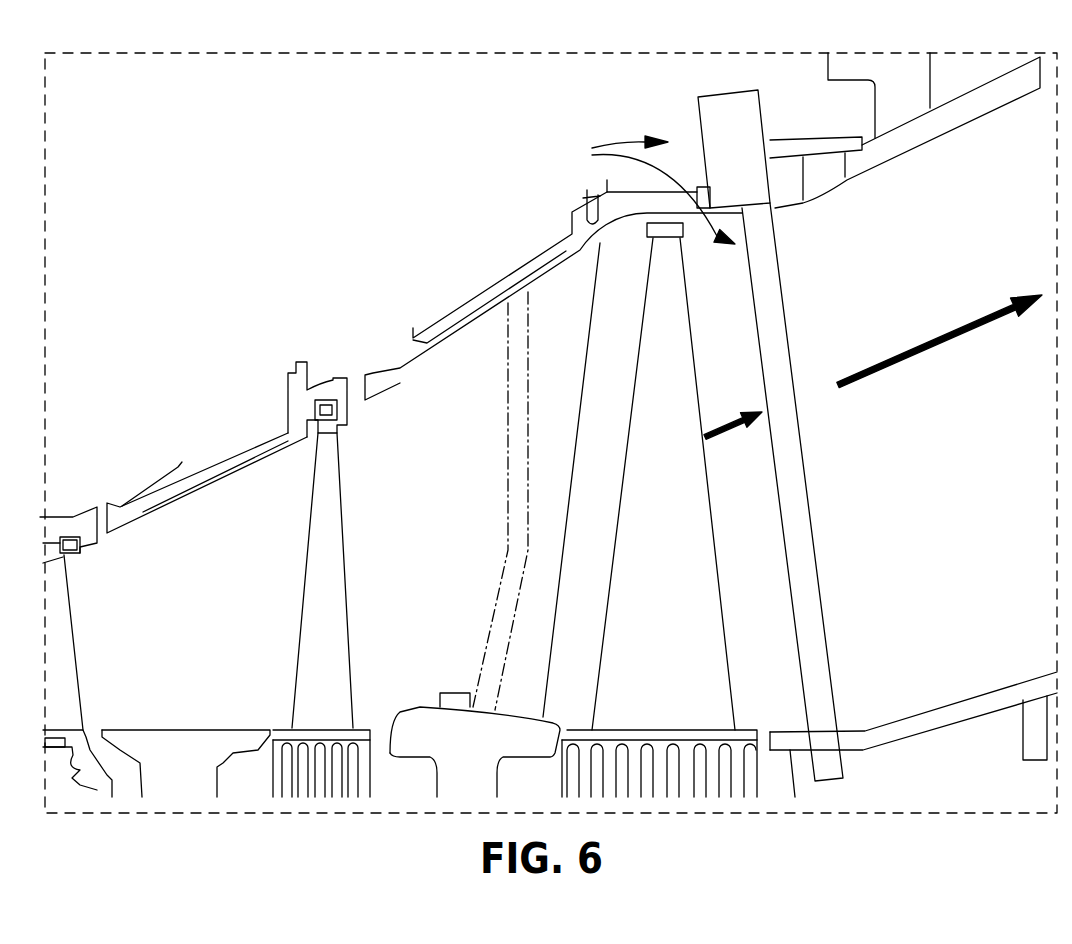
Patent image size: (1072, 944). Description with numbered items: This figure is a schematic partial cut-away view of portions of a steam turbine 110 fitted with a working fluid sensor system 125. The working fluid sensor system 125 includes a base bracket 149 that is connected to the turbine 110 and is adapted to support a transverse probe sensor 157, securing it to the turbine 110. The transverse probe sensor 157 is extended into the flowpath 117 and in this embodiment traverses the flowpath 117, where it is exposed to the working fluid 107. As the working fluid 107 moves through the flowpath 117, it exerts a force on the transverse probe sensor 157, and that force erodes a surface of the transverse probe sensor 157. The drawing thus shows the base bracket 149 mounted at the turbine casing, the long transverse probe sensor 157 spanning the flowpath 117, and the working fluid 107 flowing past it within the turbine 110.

The turbine 110 is at (114, 105).
The flowpath 117 is at (944, 258).
The working fluid 107 is at (873, 382).
The working fluid sensor system 125 is at (641, 190).
The base bracket 149 is at (757, 170).
The transverse probe sensor 157 is at (782, 352).